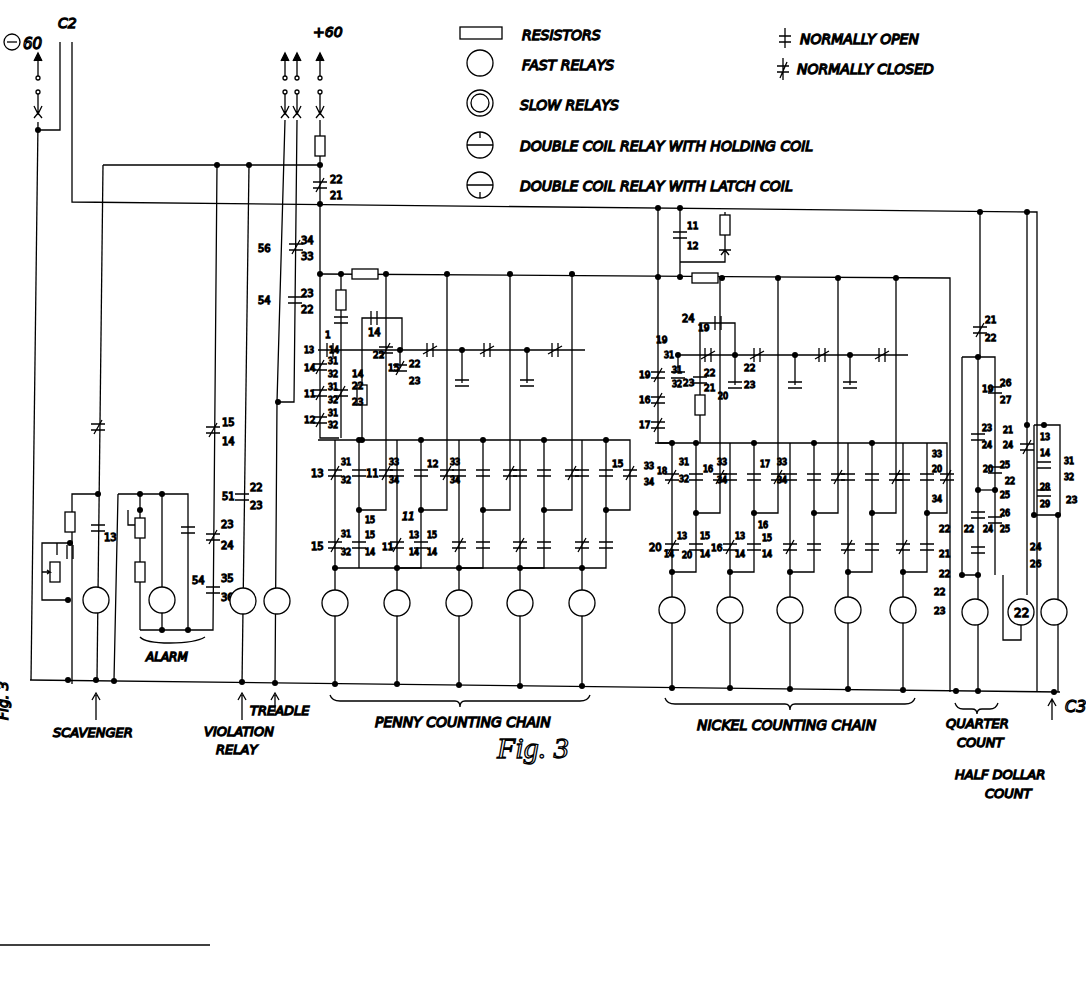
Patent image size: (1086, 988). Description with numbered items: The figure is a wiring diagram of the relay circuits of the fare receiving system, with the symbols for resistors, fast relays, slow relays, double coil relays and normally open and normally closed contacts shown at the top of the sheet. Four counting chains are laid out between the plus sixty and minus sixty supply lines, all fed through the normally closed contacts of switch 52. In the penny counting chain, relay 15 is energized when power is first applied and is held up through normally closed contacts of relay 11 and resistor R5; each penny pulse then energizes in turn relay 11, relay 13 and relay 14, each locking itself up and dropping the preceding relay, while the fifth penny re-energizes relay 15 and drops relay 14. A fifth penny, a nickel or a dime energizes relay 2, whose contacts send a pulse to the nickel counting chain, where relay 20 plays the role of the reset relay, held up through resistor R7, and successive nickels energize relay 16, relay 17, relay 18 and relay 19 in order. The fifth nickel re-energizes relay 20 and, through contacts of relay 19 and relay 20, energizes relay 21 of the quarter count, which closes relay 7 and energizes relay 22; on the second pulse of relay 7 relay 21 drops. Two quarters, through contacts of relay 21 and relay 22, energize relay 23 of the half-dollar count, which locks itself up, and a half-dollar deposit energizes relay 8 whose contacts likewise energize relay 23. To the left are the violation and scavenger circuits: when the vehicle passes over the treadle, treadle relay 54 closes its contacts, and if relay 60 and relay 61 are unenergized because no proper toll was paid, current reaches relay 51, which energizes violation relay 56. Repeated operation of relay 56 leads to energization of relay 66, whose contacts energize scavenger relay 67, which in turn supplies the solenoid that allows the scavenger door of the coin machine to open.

The relay 2 is at (673, 236).
The relay 7 is at (976, 436).
The relay 8 is at (1044, 467).
The relay 11 is at (397, 603).
The relay 13 is at (520, 603).
The relay 14 is at (582, 603).
The relay 15 is at (335, 603).
The relay 16 is at (730, 610).
The relay 17 is at (790, 610).
The relay 18 is at (848, 610).
The relay 19 is at (903, 610).
The relay 20 is at (672, 610).
The relay 21 is at (975, 612).
The relay 22 is at (968, 330).
The relay 23 is at (1054, 612).
The relay 51 is at (162, 600).
The relay actuated switch 52 is at (313, 183).
The relay 54 is at (248, 600).
The violation relay 56 is at (266, 427).
The relay 60 is at (202, 431).
The relay 61 is at (207, 537).
The relay 66 is at (77, 522).
The relay 67 is at (96, 600).
The resistor R5 is at (365, 260).
The resistor R7 is at (705, 286).